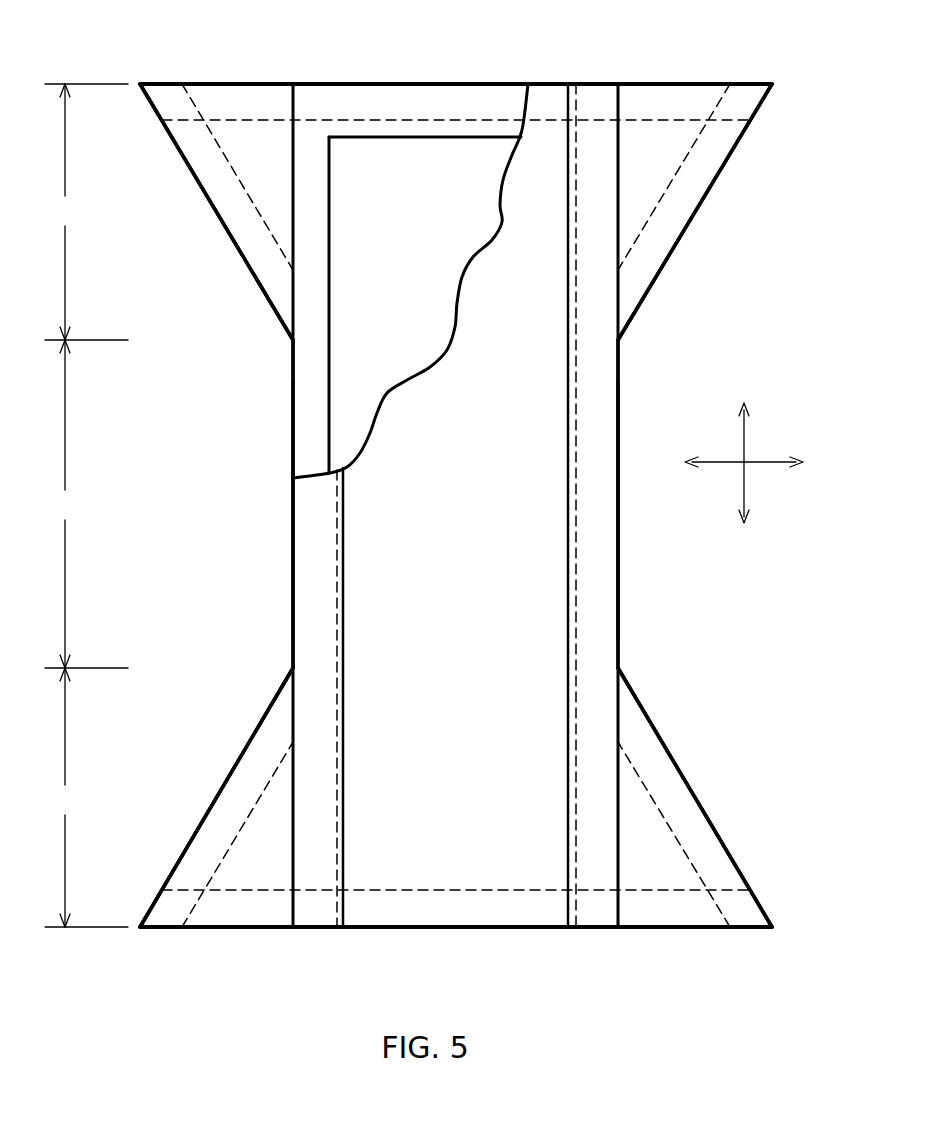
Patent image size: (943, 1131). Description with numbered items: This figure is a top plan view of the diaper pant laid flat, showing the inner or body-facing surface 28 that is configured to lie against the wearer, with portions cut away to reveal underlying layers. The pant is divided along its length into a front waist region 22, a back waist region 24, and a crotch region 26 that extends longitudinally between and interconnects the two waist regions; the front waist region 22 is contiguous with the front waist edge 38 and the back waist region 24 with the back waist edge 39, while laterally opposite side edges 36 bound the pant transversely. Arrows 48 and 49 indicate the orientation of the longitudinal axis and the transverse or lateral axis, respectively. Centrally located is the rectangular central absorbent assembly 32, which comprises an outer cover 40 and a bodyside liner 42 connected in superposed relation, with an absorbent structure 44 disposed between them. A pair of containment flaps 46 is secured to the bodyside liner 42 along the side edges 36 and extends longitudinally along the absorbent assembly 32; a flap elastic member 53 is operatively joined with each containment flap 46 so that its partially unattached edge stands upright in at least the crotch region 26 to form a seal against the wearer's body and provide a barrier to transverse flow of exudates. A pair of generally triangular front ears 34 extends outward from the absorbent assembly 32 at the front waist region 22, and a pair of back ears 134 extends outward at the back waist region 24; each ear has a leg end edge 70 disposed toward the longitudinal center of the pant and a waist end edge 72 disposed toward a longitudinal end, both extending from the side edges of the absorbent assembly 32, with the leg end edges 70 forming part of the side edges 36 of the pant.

The front waist region 22 is at (86, 212).
The back waist region 24 is at (86, 797).
The crotch region 26 is at (86, 504).
The inner or body-facing surface 28 is at (447, 510).
The central absorbent assembly 32 is at (544, 105).
The front ears 34 is at (250, 168).
The side edges 36 is at (293, 567).
The front waist edge 38 is at (259, 84).
The back waist edge 39 is at (700, 927).
The outer cover 40 is at (310, 152).
The bodyside liner 42 is at (530, 612).
The absorbent structure 44 is at (402, 148).
The containment flaps 46 is at (310, 630).
The longitudinal axis arrow 48 is at (744, 433).
The transverse or lateral axis arrow 49 is at (768, 462).
The flap elastic member 53 is at (335, 510).
The leg end edge 70 is at (230, 242).
The waist end edge 72 is at (207, 84).
The back ears 134 is at (242, 877).